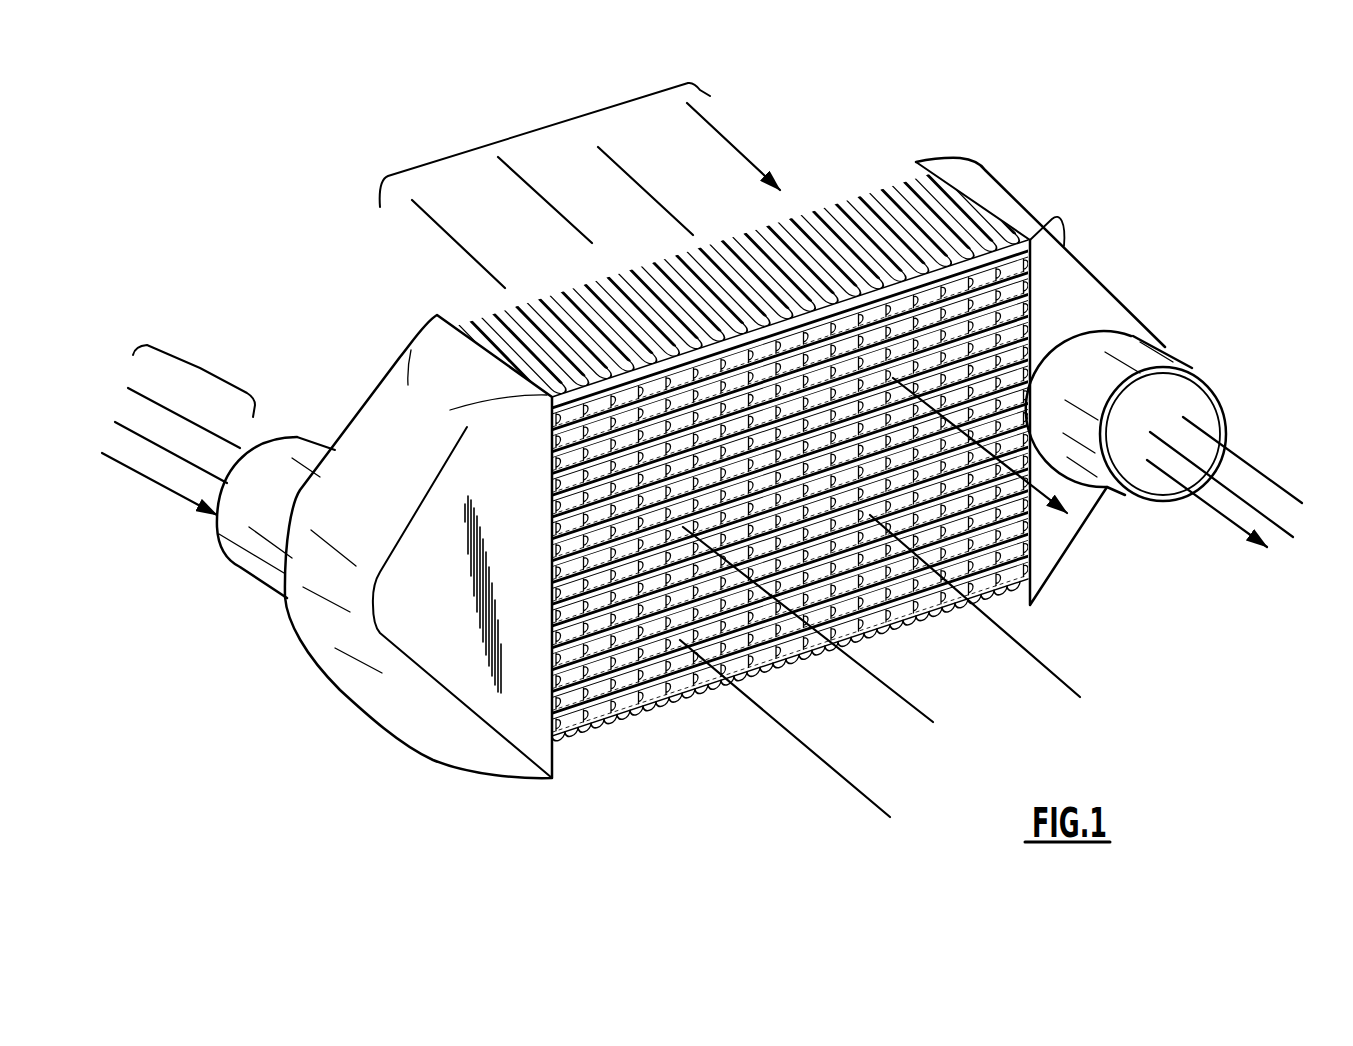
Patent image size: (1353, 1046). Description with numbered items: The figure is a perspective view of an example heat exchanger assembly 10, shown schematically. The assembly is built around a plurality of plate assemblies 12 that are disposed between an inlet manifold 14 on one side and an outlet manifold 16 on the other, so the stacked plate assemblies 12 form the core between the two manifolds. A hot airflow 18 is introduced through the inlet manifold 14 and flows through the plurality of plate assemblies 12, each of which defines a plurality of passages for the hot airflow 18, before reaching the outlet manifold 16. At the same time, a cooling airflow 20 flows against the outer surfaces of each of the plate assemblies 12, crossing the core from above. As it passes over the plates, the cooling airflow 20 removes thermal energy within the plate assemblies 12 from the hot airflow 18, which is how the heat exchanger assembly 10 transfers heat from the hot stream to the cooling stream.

The heat exchanger assembly 10 is at (323, 225).
The plate assemblies 12 is at (680, 690).
The inlet manifold 14 is at (420, 648).
The outlet manifold 16 is at (1057, 538).
The hot airflow 18 is at (200, 368).
The cooling airflow 20 is at (535, 130).